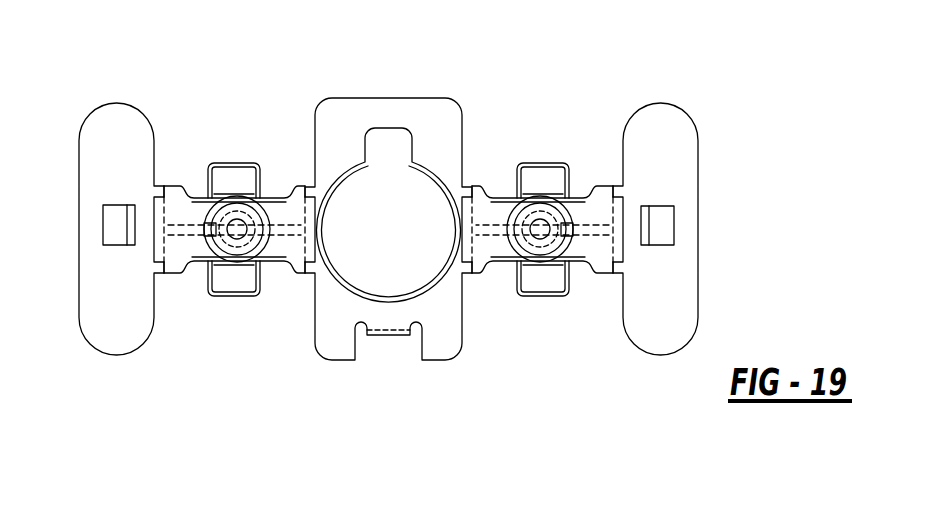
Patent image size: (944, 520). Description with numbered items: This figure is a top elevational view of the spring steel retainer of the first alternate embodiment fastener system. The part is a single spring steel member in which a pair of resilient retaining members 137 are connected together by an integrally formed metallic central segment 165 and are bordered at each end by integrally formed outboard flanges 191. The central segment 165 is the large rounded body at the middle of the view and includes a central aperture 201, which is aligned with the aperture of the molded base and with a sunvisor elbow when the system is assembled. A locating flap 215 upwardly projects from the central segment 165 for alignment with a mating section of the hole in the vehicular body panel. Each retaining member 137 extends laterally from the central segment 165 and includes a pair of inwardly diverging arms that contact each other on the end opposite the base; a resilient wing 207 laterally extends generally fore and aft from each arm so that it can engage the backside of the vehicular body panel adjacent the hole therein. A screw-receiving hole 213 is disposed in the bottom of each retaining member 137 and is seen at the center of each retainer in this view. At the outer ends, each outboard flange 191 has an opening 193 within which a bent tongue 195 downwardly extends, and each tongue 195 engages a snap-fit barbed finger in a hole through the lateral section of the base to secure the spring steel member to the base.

The resilient retaining member 137 is at (275, 250).
The central segment 165 is at (355, 100).
The outboard flange 191 is at (658, 138).
The opening 193 is at (132, 222).
The bent tongue 195 is at (123, 243).
The central aperture 201 is at (437, 192).
The resilient wing 207 is at (258, 165).
The screw-receiving hole 213 is at (238, 232).
The locating flap 215 is at (388, 335).